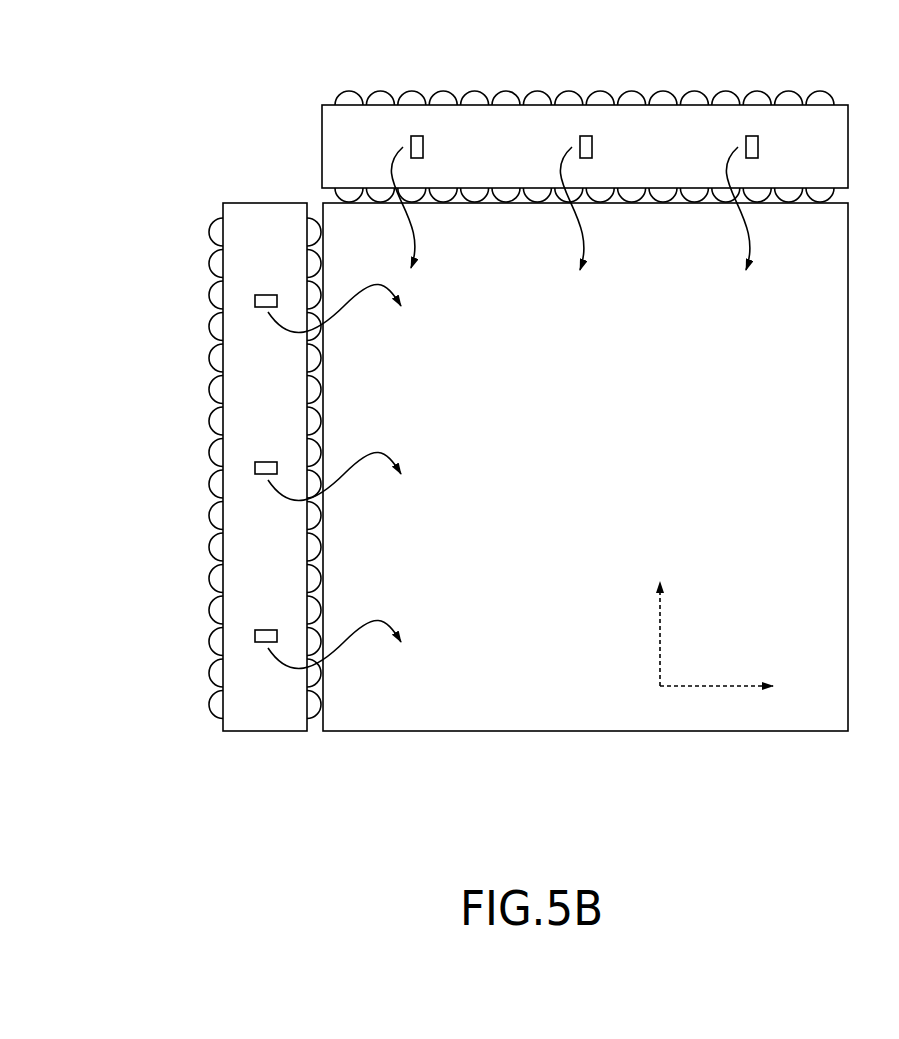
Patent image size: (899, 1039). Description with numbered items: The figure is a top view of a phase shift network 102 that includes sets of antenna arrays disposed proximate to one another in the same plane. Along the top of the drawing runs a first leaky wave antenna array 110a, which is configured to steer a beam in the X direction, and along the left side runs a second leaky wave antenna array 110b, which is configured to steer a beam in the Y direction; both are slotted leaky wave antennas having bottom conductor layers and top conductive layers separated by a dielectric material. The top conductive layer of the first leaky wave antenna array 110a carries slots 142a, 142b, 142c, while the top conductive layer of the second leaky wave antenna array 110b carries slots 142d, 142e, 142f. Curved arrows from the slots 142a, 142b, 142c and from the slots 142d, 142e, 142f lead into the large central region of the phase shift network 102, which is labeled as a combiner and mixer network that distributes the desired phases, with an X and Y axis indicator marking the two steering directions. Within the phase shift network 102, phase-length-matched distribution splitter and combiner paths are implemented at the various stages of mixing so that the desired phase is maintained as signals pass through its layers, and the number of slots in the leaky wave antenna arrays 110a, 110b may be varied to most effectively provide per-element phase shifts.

The phase shift network 102 is at (249, 108).
The first leaky wave antenna array 110a is at (556, 56).
The second leaky wave antenna array 110b is at (171, 382).
The slot 142a is at (418, 136).
The slot 142b is at (586, 136).
The slot 142c is at (752, 136).
The slot 142d is at (265, 299).
The slot 142e is at (265, 467).
The slot 142f is at (265, 634).